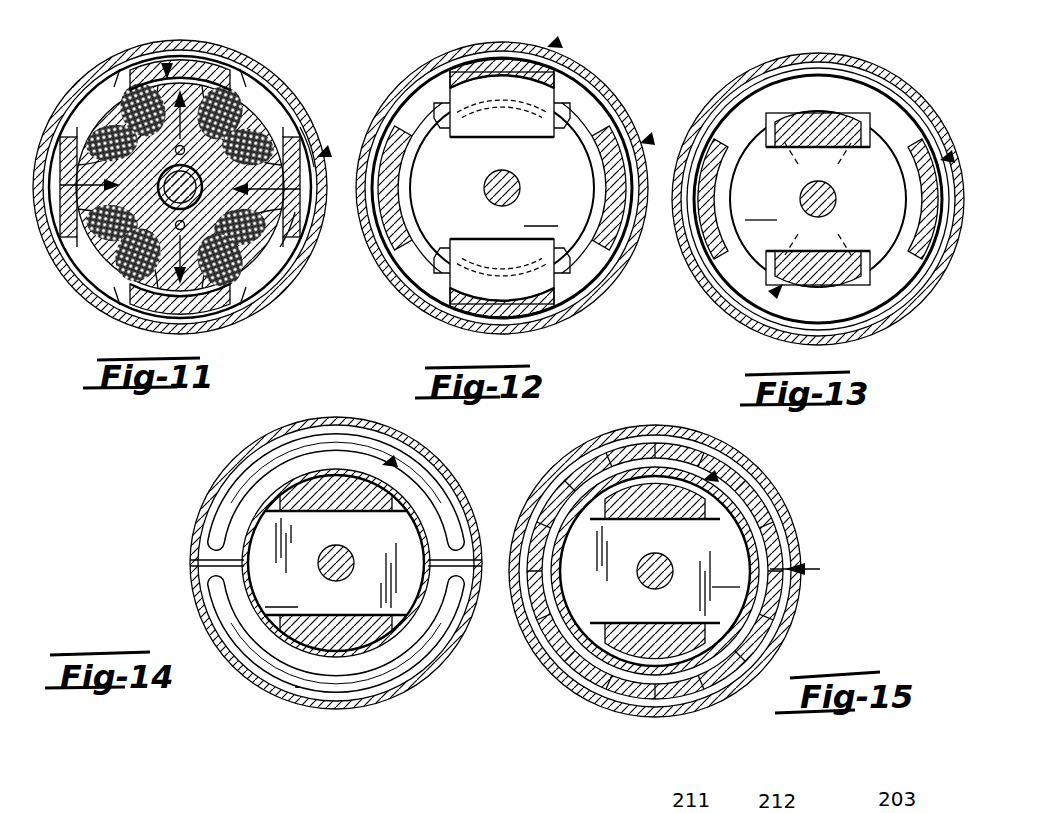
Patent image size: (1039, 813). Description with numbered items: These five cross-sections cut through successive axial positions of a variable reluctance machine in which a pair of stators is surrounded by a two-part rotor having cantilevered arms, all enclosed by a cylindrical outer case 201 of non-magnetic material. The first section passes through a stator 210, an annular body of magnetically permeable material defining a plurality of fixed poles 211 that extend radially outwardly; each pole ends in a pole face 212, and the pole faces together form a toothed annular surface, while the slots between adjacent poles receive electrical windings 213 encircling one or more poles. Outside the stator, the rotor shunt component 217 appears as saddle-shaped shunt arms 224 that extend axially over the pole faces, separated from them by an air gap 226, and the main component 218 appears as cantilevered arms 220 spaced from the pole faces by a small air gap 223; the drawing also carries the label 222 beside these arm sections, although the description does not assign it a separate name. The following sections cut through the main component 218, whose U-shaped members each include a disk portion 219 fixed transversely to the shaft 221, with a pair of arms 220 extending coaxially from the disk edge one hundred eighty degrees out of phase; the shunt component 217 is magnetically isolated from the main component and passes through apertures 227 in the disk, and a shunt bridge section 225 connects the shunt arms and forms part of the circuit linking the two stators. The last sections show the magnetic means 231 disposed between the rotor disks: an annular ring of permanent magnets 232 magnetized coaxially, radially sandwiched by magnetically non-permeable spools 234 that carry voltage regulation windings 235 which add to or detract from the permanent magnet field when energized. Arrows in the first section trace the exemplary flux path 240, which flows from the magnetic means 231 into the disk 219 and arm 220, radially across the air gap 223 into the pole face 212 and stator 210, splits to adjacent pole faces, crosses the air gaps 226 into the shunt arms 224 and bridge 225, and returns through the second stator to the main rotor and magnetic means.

In FIG. 11, the cylindrical outer case 201 is at (180, 187).
In FIG. 12, the cylindrical outer case 201 is at (502, 181).
In FIG. 13, the cylindrical outer case 201 is at (813, 199).
In FIG. 14, the cylindrical outer case 201 is at (320, 563).
In FIG. 15, the cylindrical outer case 201 is at (649, 571).
In FIG. 11, the stator 210 is at (180, 147).
In FIG. 11, the fixed pole 211 is at (192, 179).
In FIG. 11, the pole face 212 is at (129, 53).
In FIG. 11, the electrical winding 213 is at (188, 195).
In FIG. 11, the shunt component 217 is at (187, 162).
In FIG. 12, the shunt component 217 is at (502, 165).
In FIG. 13, the shunt component 217 is at (740, 319).
In FIG. 14, the shunt component 217 is at (353, 538).
In FIG. 15, the shunt component 217 is at (666, 549).
In FIG. 11, the main component 218 is at (328, 138).
In FIG. 12, the main component 218 is at (514, 188).
In FIG. 13, the main component 218 is at (822, 199).
In FIG. 12, the disk portion 219 is at (502, 188).
In FIG. 13, the disk portion 219 is at (818, 199).
In FIG. 14, the disk portion 219 is at (335, 563).
In FIG. 15, the disk portion 219 is at (670, 571).
In FIG. 11, the arm 220 is at (320, 230).
In FIG. 12, the arm 220 is at (502, 188).
In FIG. 13, the arm 220 is at (818, 199).
In FIG. 11, the shaft 221 is at (218, 211).
In FIG. 12, the shaft 221 is at (503, 176).
In FIG. 13, the shaft 221 is at (841, 201).
In FIG. 14, the shaft 221 is at (336, 563).
In FIG. 15, the shaft 221 is at (669, 560).
In FIG. 11, the coil 222 is at (207, 241).
In FIG. 11, the air gap 223 is at (191, 223).
In FIG. 11, the shunt arm 224 is at (190, 181).
In FIG. 12, the shunt arm 224 is at (486, 186).
In FIG. 13, the shunt bridge section 225 is at (804, 197).
In FIG. 14, the shunt bridge section 225 is at (336, 563).
In FIG. 15, the shunt bridge section 225 is at (655, 570).
In FIG. 11, the air gap 226 is at (225, 179).
In FIG. 12, the aperture 227 is at (541, 156).
In FIG. 13, the aperture 227 is at (818, 186).
In FIG. 14, the magnetic means 231 is at (336, 605).
In FIG. 15, the magnetic means 231 is at (815, 570).
In FIG. 15, the permanent magnet 232 is at (672, 571).
In FIG. 14, the spool 234 is at (336, 563).
In FIG. 15, the spool 234 is at (694, 571).
In FIG. 14, the voltage regulation winding 235 is at (336, 563).
In FIG. 11, the flux path 240 is at (210, 187).